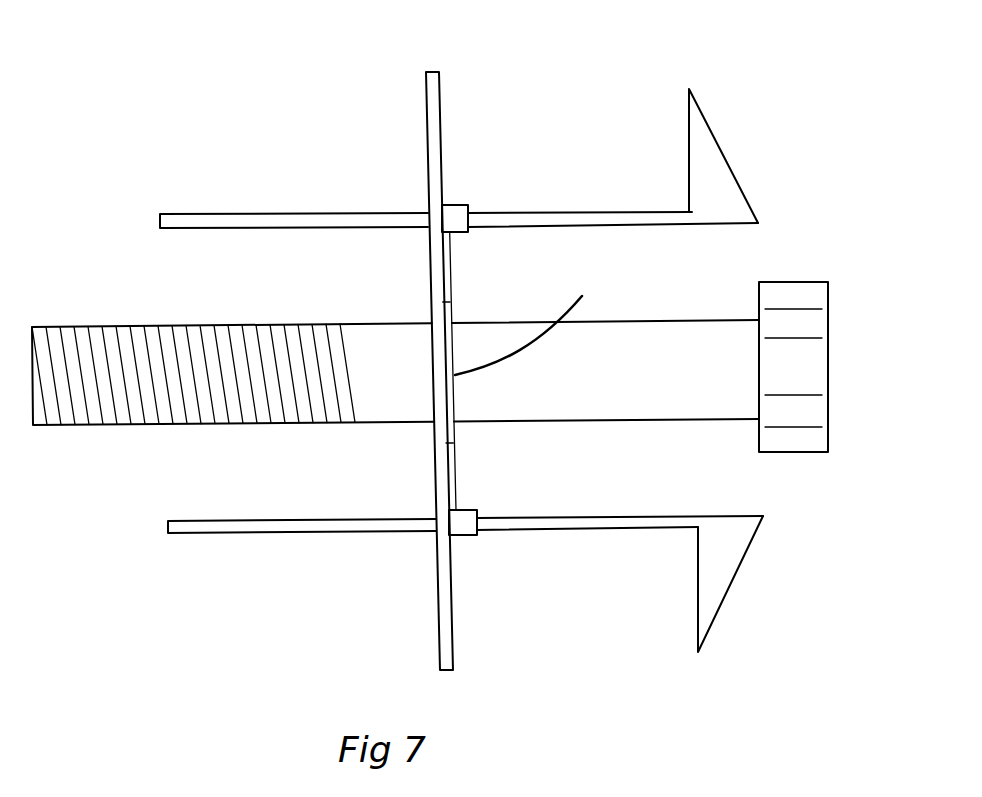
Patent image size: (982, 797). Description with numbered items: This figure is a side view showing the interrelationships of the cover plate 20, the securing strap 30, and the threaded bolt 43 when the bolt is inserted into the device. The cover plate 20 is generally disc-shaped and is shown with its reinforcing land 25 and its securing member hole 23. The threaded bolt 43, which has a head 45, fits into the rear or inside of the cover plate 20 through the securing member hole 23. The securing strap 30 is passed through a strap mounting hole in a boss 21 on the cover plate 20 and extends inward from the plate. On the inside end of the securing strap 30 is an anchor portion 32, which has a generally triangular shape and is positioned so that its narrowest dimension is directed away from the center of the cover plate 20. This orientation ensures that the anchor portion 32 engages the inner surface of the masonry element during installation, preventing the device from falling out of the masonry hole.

The cover plate 20 is at (451, 85).
The boss 21 is at (480, 192).
The securing member hole 23 is at (527, 327).
The reinforcing land 25 is at (455, 300).
The securing strap 30 is at (247, 213).
The anchor portion 32 is at (718, 118).
The threaded bolt 43 is at (115, 314).
The head 45 is at (805, 290).